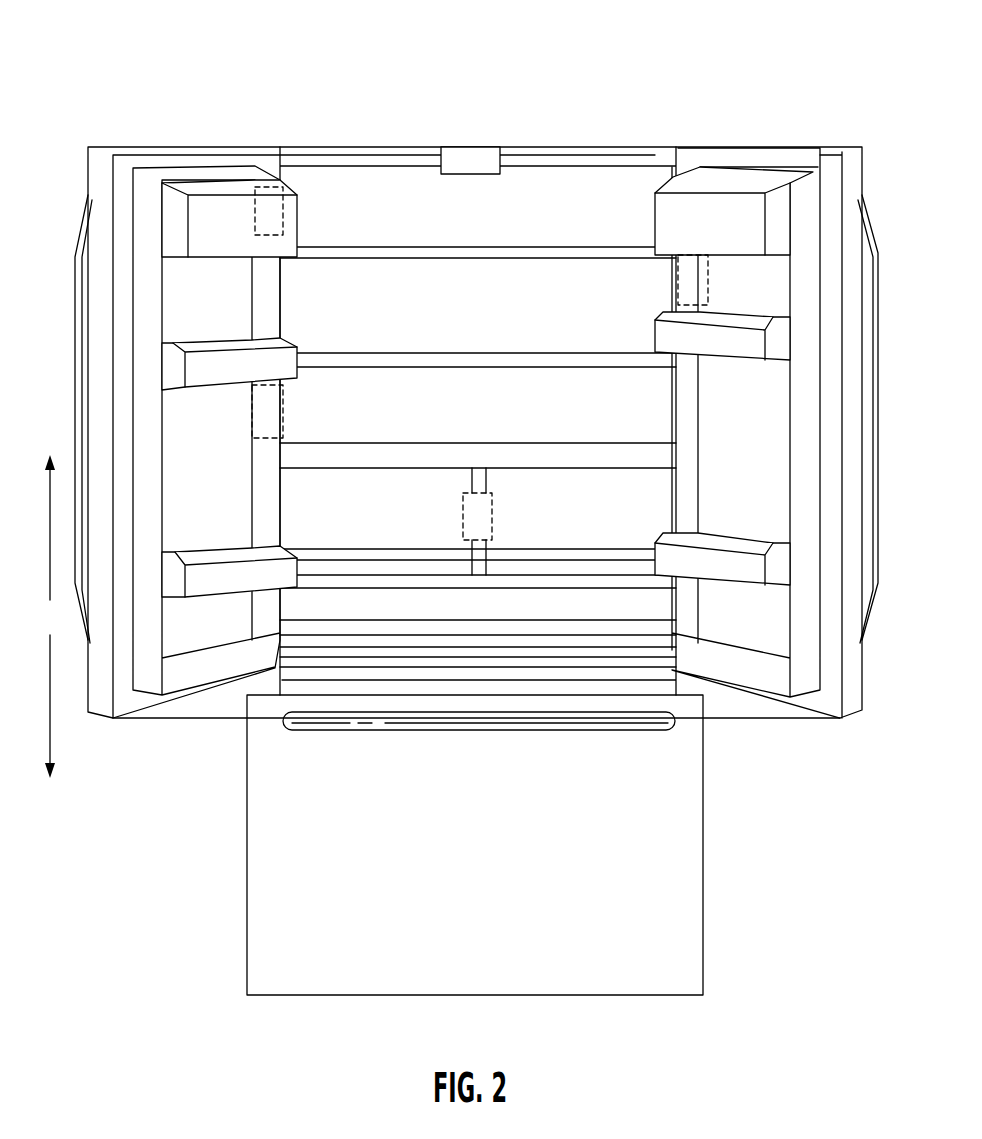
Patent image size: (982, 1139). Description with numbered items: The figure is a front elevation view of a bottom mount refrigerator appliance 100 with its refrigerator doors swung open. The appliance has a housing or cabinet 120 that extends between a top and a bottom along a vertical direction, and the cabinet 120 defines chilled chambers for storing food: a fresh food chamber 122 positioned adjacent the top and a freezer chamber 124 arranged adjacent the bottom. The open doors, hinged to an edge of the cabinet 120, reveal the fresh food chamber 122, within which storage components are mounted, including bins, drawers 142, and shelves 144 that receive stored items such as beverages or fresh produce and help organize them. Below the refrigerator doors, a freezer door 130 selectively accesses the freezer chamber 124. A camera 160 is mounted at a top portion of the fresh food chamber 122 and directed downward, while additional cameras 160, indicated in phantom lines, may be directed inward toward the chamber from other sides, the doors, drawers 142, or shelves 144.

The refrigerator appliance 100 is at (460, 497).
The cabinet 120 is at (708, 692).
The fresh food chamber 122 is at (478, 387).
The freezer chamber 124 is at (460, 845).
The freezer door 130 is at (277, 910).
The drawers 142 is at (515, 570).
The shelves 144 is at (477, 253).
The camera 160 is at (473, 175).